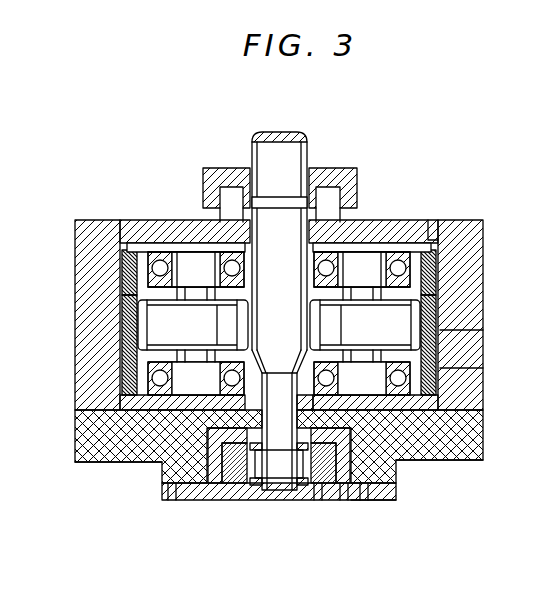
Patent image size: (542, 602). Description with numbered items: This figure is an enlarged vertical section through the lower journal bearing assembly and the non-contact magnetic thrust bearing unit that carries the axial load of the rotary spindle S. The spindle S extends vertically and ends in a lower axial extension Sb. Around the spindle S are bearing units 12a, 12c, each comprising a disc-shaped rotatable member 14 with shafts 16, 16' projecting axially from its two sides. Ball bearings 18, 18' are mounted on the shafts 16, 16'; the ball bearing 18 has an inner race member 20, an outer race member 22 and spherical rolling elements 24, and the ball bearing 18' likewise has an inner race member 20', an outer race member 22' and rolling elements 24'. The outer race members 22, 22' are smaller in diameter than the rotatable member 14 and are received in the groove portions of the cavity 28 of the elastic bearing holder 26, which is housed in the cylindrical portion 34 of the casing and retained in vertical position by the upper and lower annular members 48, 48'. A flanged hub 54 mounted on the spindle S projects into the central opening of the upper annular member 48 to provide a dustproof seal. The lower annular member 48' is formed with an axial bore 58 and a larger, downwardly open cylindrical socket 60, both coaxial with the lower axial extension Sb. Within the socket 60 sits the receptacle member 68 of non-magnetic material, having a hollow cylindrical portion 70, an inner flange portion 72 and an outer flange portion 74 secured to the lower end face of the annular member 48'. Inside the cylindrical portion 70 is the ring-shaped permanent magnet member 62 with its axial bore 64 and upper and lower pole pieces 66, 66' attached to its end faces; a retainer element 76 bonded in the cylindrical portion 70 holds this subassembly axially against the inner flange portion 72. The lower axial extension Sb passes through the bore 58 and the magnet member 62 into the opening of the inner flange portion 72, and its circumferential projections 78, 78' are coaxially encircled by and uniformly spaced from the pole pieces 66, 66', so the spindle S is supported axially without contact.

The rotary spindle S is at (252, 134).
The lower axial extension Sb is at (265, 370).
The bearing unit 12a is at (140, 318).
The bearing unit 12c is at (425, 306).
The rotatable member 14 is at (118, 346).
The shaft 16 is at (279, 232).
The shaft 16' is at (278, 447).
The ball bearing 18 is at (271, 272).
The ball bearing 18' is at (272, 350).
The inner race member 20 is at (287, 224).
The inner race member 20' is at (283, 438).
The outer race member 22 is at (302, 206).
The outer race member 22' is at (288, 470).
The spherical rolling elements 24 is at (295, 230).
The spherical rolling elements 24' is at (278, 461).
The bearing holder 26 is at (448, 336).
The cavity 28 is at (450, 368).
The cylindrical portion 34 is at (75, 231).
The upper annular member 48 is at (255, 212).
The lower annular member 48' is at (251, 446).
The flanged hub 54 is at (322, 168).
The axial bore 58 is at (306, 402).
The cylindrical socket 60 is at (212, 500).
The permanent magnet member 62 is at (344, 500).
The cylindrical axial bore 64 is at (300, 488).
The upper pole piece 66 is at (211, 455).
The lower pole piece 66' is at (228, 501).
The receptacle member 68 is at (382, 504).
The hollow cylindrical portion 70 is at (346, 455).
The inner flange portion 72 is at (318, 500).
The outer flange portion 74 is at (170, 503).
The retainer element 76 is at (356, 500).
The circumferential projection 78 is at (279, 491).
The circumferential projection 78' is at (276, 525).